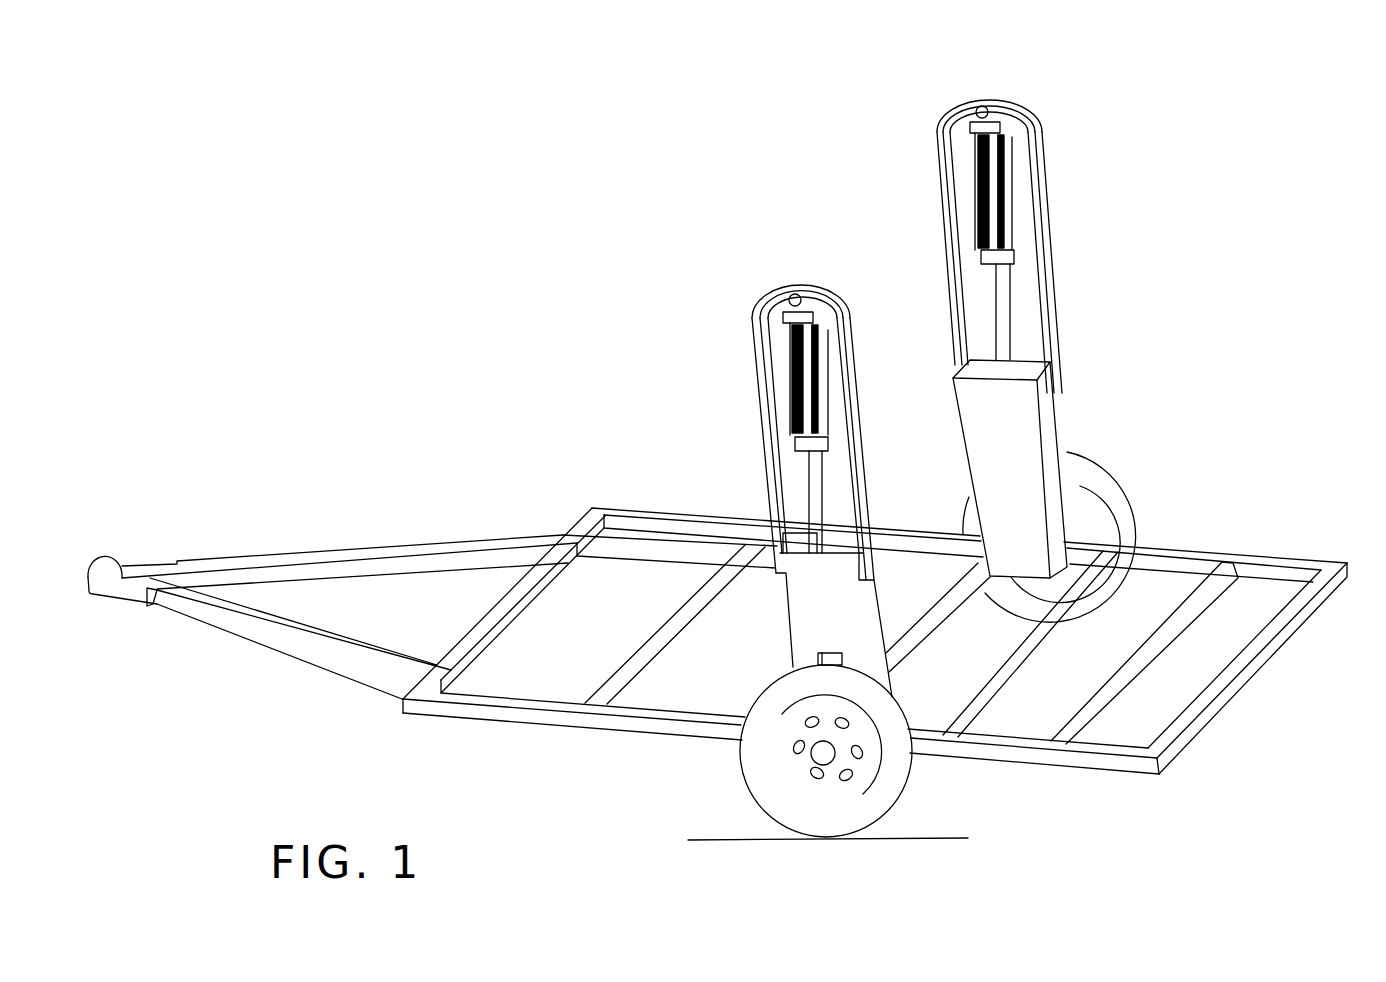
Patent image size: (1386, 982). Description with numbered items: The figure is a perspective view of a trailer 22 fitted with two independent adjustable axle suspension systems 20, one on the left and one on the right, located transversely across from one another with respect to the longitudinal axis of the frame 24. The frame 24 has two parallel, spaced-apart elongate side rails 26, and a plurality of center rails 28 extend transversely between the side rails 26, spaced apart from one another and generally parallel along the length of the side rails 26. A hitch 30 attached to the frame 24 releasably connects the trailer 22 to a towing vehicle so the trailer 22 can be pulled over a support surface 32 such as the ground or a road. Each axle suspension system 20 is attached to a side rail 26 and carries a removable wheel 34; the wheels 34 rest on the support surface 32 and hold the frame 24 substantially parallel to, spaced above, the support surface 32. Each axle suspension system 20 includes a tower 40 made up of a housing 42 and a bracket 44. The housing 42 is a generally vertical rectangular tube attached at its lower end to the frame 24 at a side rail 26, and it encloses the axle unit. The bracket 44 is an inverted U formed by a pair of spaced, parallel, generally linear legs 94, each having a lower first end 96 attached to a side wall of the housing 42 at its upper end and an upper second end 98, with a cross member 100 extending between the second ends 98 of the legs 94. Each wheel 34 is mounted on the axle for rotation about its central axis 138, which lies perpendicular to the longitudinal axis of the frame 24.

The axle suspension system 20 is at (1108, 290).
The trailer 22 is at (1214, 366).
The frame 24 is at (1276, 561).
The side rail 26 is at (1170, 560).
The center rail 28 is at (515, 612).
The hitch 30 is at (105, 556).
The support surface 32 is at (915, 832).
The wheel 34 is at (750, 776).
The tower 40 is at (783, 598).
The housing 42 is at (876, 606).
The bracket 44 is at (768, 460).
The leg 94 is at (760, 426).
The lower first end 96 is at (748, 562).
The upper second end 98 is at (750, 321).
The cross member 100 is at (772, 296).
The central axis 138 is at (824, 757).